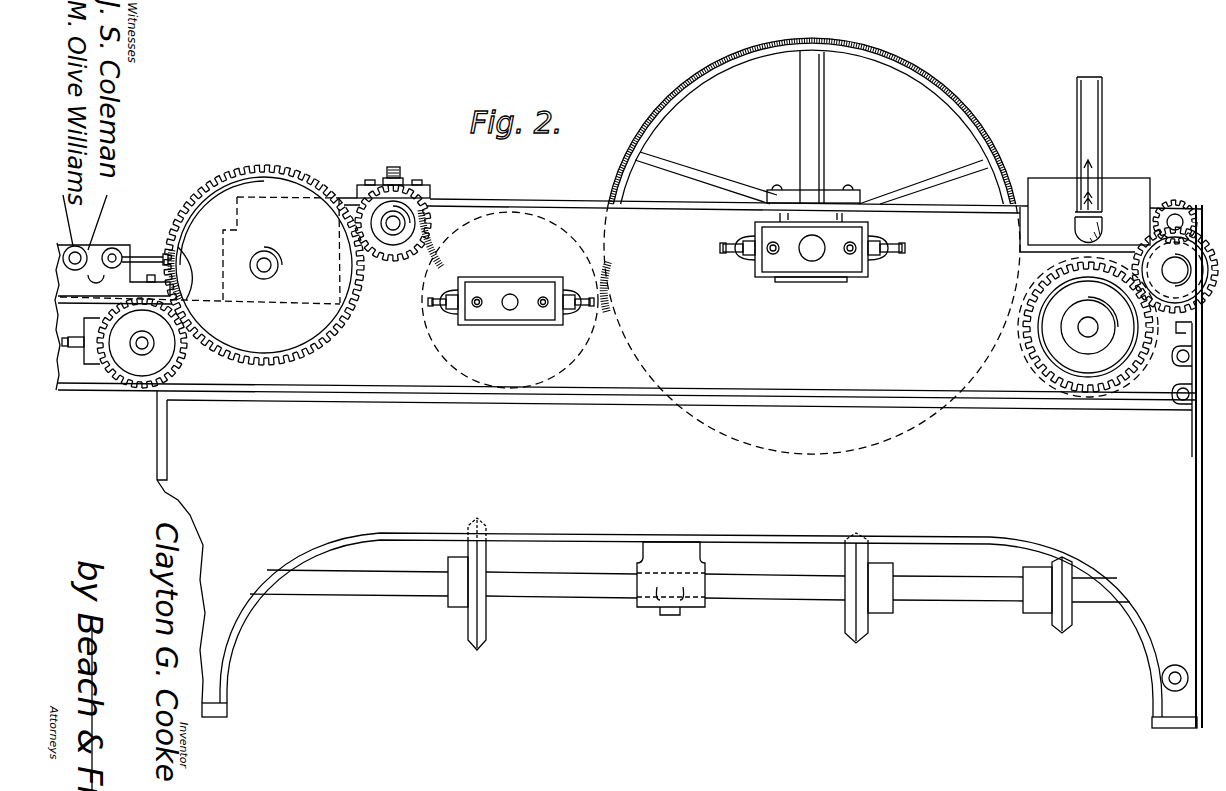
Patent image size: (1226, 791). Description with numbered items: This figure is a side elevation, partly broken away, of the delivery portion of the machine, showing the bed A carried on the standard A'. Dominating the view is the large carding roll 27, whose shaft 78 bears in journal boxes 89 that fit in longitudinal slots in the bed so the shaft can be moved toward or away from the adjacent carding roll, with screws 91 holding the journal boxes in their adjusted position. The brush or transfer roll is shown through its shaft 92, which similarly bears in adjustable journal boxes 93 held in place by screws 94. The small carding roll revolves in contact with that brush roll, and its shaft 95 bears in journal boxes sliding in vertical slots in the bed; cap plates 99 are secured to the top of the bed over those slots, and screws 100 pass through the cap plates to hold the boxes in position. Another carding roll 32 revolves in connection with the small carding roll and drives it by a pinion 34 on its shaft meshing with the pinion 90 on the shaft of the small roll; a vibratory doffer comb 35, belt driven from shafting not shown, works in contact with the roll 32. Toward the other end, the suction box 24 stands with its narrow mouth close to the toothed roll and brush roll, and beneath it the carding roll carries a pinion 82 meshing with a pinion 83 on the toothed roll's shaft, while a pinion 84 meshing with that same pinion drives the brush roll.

The suction box 24 is at (1089, 161).
The large carding roll 27 is at (950, 92).
The carding roll 32 is at (175, 247).
The pinion 34 is at (317, 320).
The vibratory doffer comb 35 is at (143, 255).
The shaft 78 is at (810, 258).
The pinion 82 is at (1092, 370).
The pinion 83 is at (1185, 287).
The pinion 84 is at (1185, 222).
The journal boxes 89 is at (850, 263).
The pinion 90 is at (412, 217).
The screws 91 is at (737, 256).
The shaft 92 is at (514, 296).
The journal boxes 93 is at (527, 312).
The screws 94 is at (447, 309).
The shaft 95 is at (393, 228).
The cap plates 99 is at (422, 187).
The screws 100 is at (394, 167).
The bed A is at (516, 299).
The standard A' is at (677, 559).